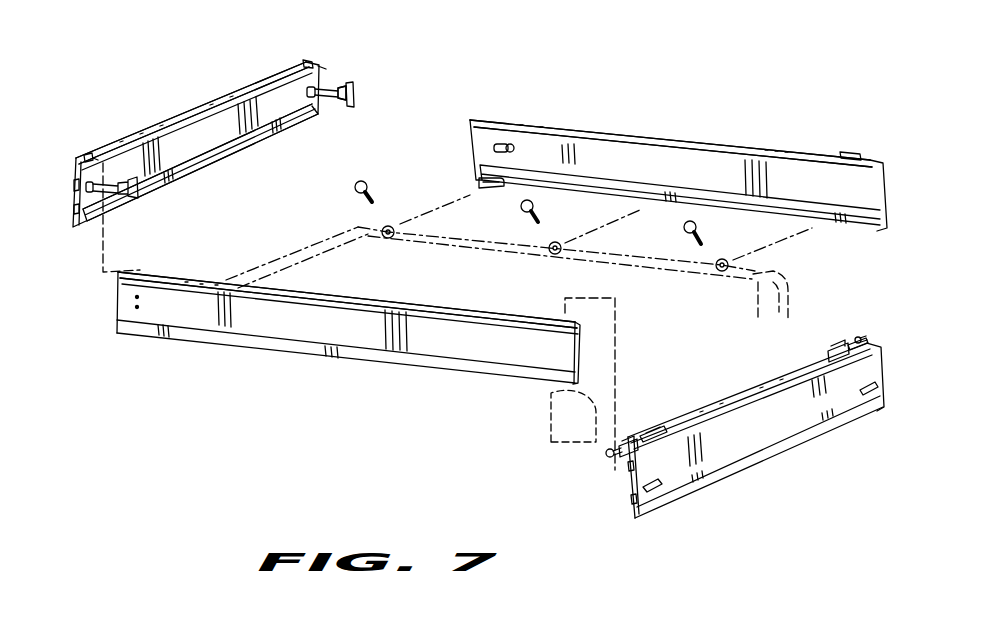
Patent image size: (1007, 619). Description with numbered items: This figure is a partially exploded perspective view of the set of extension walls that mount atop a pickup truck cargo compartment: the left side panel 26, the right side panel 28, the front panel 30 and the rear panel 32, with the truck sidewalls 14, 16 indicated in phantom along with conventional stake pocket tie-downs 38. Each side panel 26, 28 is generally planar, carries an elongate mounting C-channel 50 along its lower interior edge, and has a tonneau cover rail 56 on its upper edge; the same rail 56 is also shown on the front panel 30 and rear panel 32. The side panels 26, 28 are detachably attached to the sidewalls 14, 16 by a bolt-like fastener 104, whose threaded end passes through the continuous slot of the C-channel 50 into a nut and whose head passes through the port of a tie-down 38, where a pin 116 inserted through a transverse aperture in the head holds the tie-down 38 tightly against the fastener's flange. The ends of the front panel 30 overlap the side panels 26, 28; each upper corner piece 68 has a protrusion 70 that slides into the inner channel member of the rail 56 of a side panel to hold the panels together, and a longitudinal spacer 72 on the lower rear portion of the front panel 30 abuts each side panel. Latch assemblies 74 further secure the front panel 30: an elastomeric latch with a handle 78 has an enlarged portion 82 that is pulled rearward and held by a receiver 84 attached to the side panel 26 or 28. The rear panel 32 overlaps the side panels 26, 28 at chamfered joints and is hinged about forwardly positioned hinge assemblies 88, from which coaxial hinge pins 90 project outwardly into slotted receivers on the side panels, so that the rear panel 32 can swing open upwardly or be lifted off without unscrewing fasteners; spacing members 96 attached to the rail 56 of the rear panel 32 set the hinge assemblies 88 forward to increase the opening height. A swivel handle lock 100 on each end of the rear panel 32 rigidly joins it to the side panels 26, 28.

The sidewall 14 is at (548, 421).
The sidewall 16 is at (790, 282).
The left side panel 26 is at (297, 325).
The right side panel 28 is at (647, 151).
The front panel 30 is at (183, 130).
The rear panel 32 is at (740, 440).
The tie-down 38 is at (392, 242).
The mounting C-channel 50 is at (617, 198).
The tonneau cover rail 56 is at (227, 97).
The upper corner piece 68 is at (88, 156).
The protrusion 70 is at (94, 159).
The longitudinal spacer 72 is at (197, 170).
The latch assembly 74 is at (113, 196).
The handle 78 is at (356, 97).
The enlarged portion 82 is at (344, 89).
The receiver 84 is at (503, 143).
The hinge assembly 88 is at (642, 433).
The hinge pin 90 is at (607, 455).
The spacing member 96 is at (660, 432).
The swivel handle lock 100 is at (655, 490).
The fastener 104 is at (495, 187).
The pin 116 is at (352, 188).